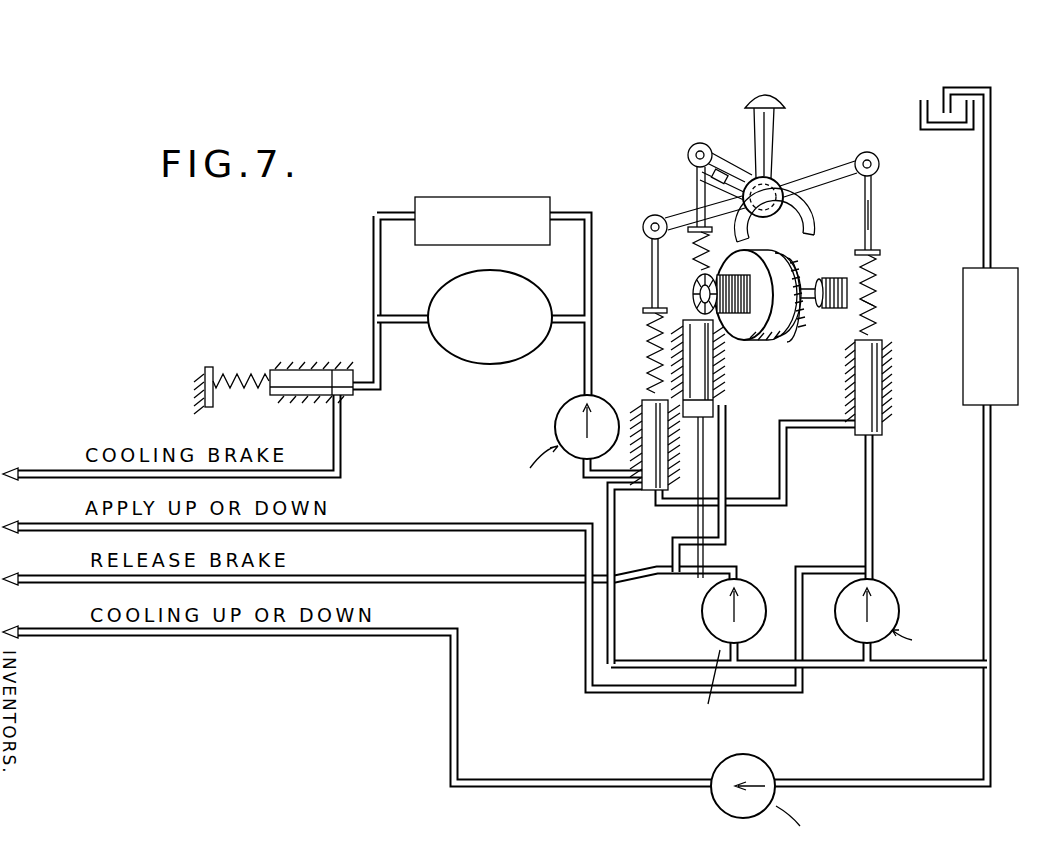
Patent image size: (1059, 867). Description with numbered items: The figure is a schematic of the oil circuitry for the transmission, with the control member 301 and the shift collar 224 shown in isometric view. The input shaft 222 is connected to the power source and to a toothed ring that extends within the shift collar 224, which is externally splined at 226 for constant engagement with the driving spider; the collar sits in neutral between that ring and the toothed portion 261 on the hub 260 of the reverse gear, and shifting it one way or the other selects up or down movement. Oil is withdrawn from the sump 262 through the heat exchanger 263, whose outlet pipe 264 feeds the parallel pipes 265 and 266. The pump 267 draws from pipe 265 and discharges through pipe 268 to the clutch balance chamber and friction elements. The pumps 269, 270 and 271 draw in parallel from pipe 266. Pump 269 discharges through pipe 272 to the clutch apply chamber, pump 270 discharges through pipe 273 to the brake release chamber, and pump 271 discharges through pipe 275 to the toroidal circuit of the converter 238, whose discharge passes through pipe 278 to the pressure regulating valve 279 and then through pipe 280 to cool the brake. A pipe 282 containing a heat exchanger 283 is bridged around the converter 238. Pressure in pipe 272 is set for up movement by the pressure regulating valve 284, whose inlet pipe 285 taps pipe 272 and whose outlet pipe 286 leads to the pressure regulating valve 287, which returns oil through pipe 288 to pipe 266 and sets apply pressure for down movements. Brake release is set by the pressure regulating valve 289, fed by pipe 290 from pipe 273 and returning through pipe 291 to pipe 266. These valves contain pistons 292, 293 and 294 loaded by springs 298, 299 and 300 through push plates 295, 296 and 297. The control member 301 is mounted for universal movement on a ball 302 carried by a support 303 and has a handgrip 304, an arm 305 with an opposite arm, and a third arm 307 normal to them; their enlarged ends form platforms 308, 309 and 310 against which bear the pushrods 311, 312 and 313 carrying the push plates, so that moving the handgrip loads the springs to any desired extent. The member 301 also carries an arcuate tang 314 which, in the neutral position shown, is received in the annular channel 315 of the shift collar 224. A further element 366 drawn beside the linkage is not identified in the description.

The input shaft 222 is at (809, 266).
The shift collar 224 is at (801, 324).
The external splines of the shift collar 226 is at (726, 320).
The converter 238 is at (460, 364).
The gear hub 260 is at (878, 281).
The toothed portion of the gear hub 261 is at (832, 279).
The sump 262 is at (924, 104).
The heat exchanger 263 is at (1013, 392).
The outlet pipe 264 is at (995, 550).
The flow pipe 265 is at (993, 725).
The flow pipe 266 is at (950, 668).
The pump 267 is at (711, 773).
The pipe 268 is at (523, 780).
The pump 269 is at (888, 588).
The pump 270 is at (766, 622).
The pump 271 is at (572, 454).
The pipe 272 is at (801, 566).
The pipe 273 is at (530, 586).
The pipe 275 is at (584, 365).
The pipe 278 is at (414, 327).
The pressure regulating valve 279 is at (308, 368).
The pipe 280 is at (347, 475).
The pipe 282 is at (380, 203).
The heat exchanger 283 is at (500, 197).
The pressure regulating valve 284 is at (892, 403).
The pipe 285 is at (876, 514).
The pipe 286 is at (822, 430).
The pressure regulating valve 287 is at (603, 489).
The pipe 288 is at (628, 496).
The pressure regulating valve 289 is at (730, 398).
The pipe 290 is at (706, 556).
The pipe 291 is at (706, 428).
The piston 292 is at (888, 381).
The piston 293 is at (650, 395).
The piston 294 is at (715, 372).
The push plate 295 is at (880, 252).
The push plate 296 is at (650, 304).
The push plate 297 is at (684, 216).
The spring 298 is at (880, 305).
The spring 299 is at (651, 340).
The spring 300 is at (698, 262).
The control member 301 is at (785, 153).
The ball 302 is at (792, 183).
The support 303 is at (728, 150).
The handgrip 304 is at (778, 125).
The arm 305 is at (876, 190).
The third arm 307 is at (742, 167).
The platform 308 is at (880, 159).
The platform 309 is at (644, 217).
The platform 310 is at (692, 144).
The pushrod 311 is at (875, 217).
The pushrod 312 is at (650, 270).
The pushrod 313 is at (696, 160).
The arcuate tang 314 is at (805, 231).
The annular channel 315 is at (788, 345).
The roller 366 is at (713, 174).